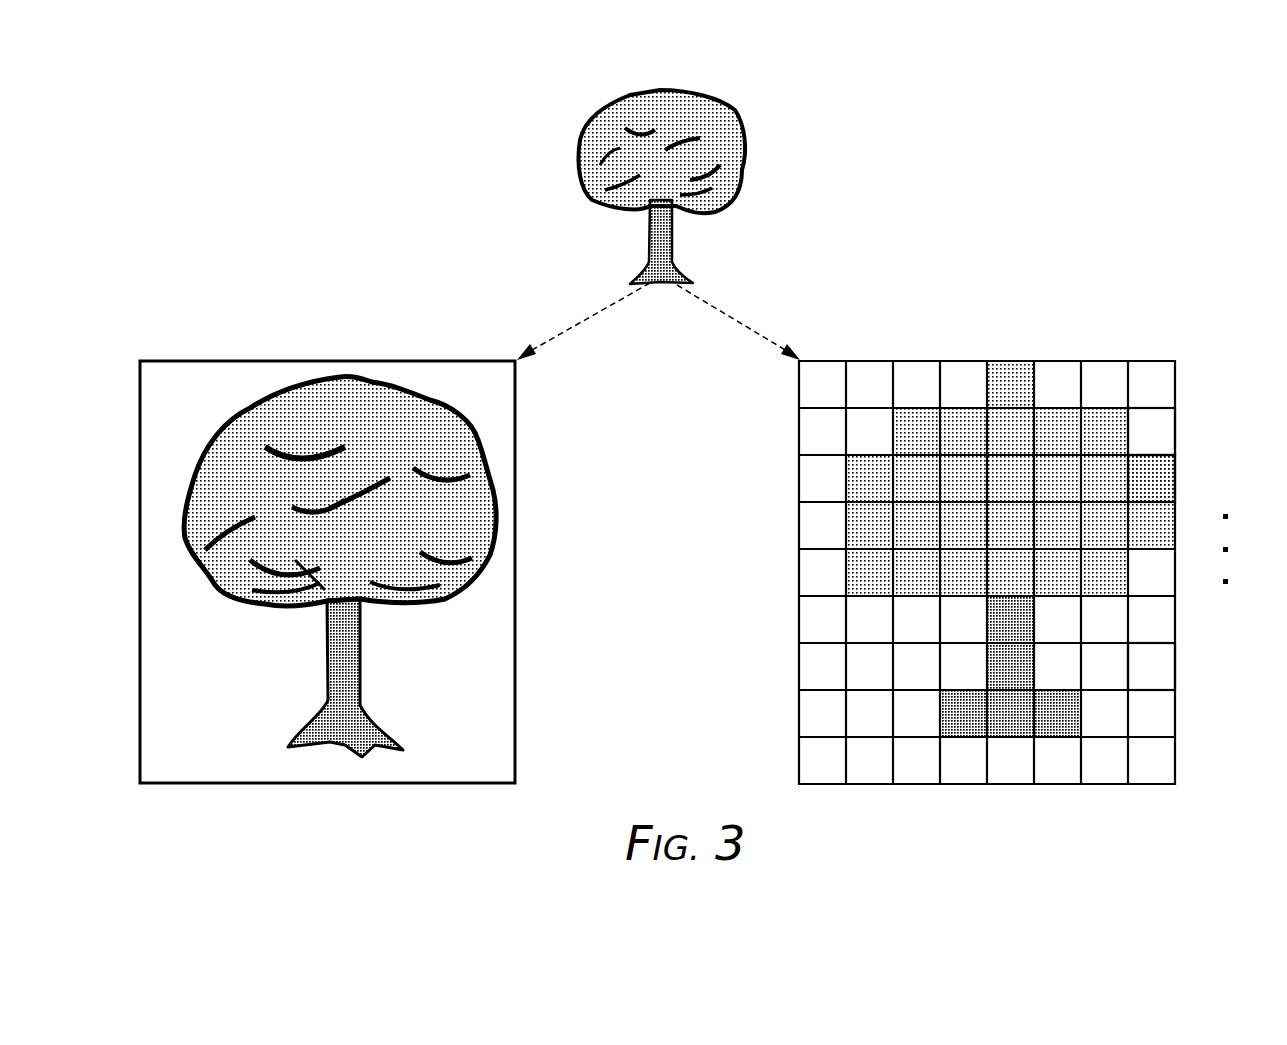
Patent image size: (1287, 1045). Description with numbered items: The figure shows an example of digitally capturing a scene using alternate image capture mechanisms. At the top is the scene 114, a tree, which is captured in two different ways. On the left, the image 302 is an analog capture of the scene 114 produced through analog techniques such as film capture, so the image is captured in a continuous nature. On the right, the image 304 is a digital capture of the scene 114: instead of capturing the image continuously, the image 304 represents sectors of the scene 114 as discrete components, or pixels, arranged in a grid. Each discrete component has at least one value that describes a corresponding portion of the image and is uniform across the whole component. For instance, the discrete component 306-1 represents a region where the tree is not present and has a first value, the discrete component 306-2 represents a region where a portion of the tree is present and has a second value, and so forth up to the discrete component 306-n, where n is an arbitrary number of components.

The scene 114 is at (672, 92).
The image 302 is at (327, 361).
The image 304 is at (987, 361).
The discrete component 306-1 is at (1161, 428).
The discrete component 306-2 is at (1159, 476).
The discrete component 306-n is at (1161, 663).